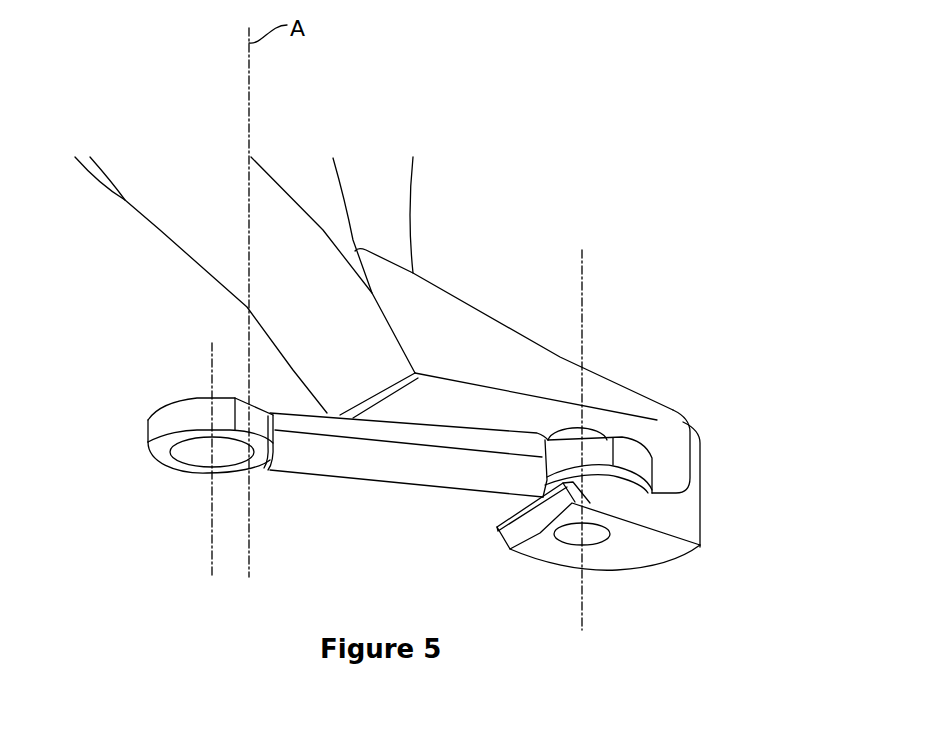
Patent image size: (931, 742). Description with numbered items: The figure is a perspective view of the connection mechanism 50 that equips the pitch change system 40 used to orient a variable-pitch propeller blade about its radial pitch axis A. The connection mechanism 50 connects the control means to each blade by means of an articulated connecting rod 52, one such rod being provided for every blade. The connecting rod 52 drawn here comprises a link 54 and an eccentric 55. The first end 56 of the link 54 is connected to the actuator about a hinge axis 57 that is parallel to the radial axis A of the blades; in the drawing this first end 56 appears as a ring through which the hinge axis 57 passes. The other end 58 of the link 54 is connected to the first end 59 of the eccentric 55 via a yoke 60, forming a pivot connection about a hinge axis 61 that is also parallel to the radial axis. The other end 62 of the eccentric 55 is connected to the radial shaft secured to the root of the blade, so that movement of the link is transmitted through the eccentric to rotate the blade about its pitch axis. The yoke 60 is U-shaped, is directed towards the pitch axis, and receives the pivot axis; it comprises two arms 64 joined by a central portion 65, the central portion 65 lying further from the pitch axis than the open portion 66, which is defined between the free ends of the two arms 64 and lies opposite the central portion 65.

The system for changing the pitch of the blades 40 is at (149, 354).
The connection mechanism 50 is at (676, 250).
The connecting rod 52 is at (750, 470).
The link 54 is at (345, 450).
The eccentric 55 is at (508, 362).
The first end of the link 56 is at (168, 462).
The hinge axis 57 is at (210, 565).
The other end of the link 58 is at (628, 460).
The first end of the eccentric 59 is at (645, 417).
The yoke 60 is at (543, 547).
The hinge axis 61 is at (582, 598).
The other end of the eccentric 62 is at (440, 323).
The arms 64 is at (603, 390).
The central portion 65 is at (700, 443).
The open portion 66 is at (500, 507).